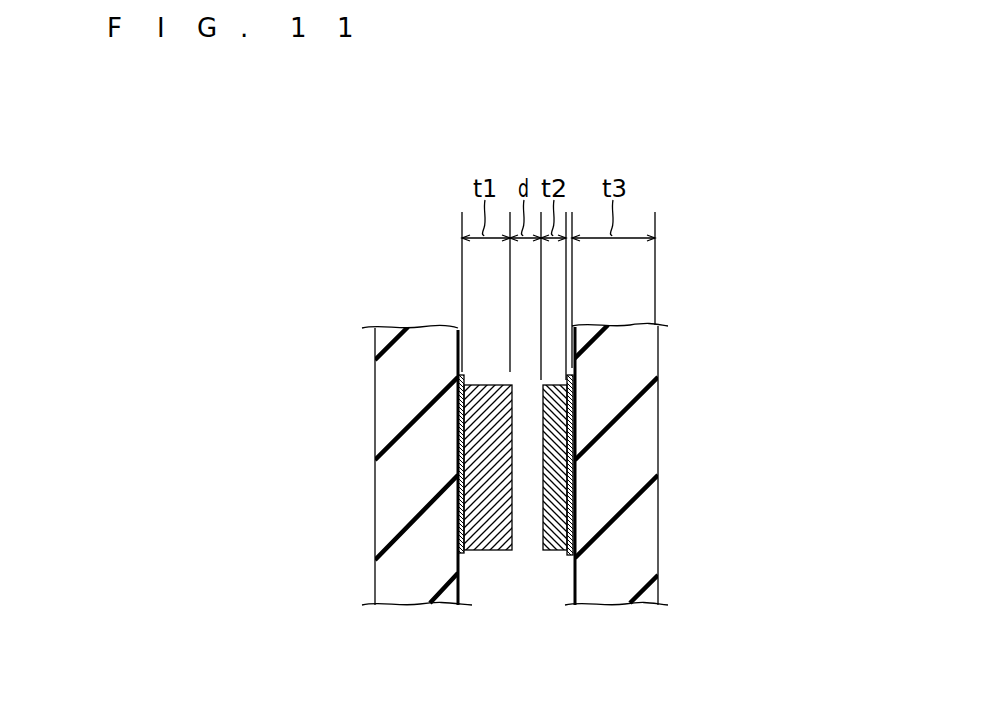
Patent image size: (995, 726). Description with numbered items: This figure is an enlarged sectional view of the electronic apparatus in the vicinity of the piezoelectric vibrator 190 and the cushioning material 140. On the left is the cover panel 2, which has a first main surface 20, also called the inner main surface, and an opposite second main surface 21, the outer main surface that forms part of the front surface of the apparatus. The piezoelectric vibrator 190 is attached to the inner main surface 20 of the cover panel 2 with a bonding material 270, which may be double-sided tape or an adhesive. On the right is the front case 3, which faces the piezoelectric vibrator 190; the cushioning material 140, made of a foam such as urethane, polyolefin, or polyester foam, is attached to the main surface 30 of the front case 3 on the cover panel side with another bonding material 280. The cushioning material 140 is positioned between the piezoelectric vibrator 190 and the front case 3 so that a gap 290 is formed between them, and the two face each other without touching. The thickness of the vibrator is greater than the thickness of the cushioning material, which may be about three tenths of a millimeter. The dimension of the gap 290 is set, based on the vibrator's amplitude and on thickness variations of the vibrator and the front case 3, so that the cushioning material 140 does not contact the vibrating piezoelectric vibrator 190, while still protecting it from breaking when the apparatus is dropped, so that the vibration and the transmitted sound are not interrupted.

The cover panel 2 is at (383, 413).
The front case 3 is at (648, 412).
The first main surface 20 is at (460, 590).
The second main surface 21 is at (374, 588).
The main surface 30 is at (575, 588).
The cushioning material 140 is at (575, 525).
The piezoelectric vibrator 190 is at (460, 527).
The bonding material 270 is at (458, 472).
The bonding material 280 is at (575, 470).
The gap 290 is at (531, 544).